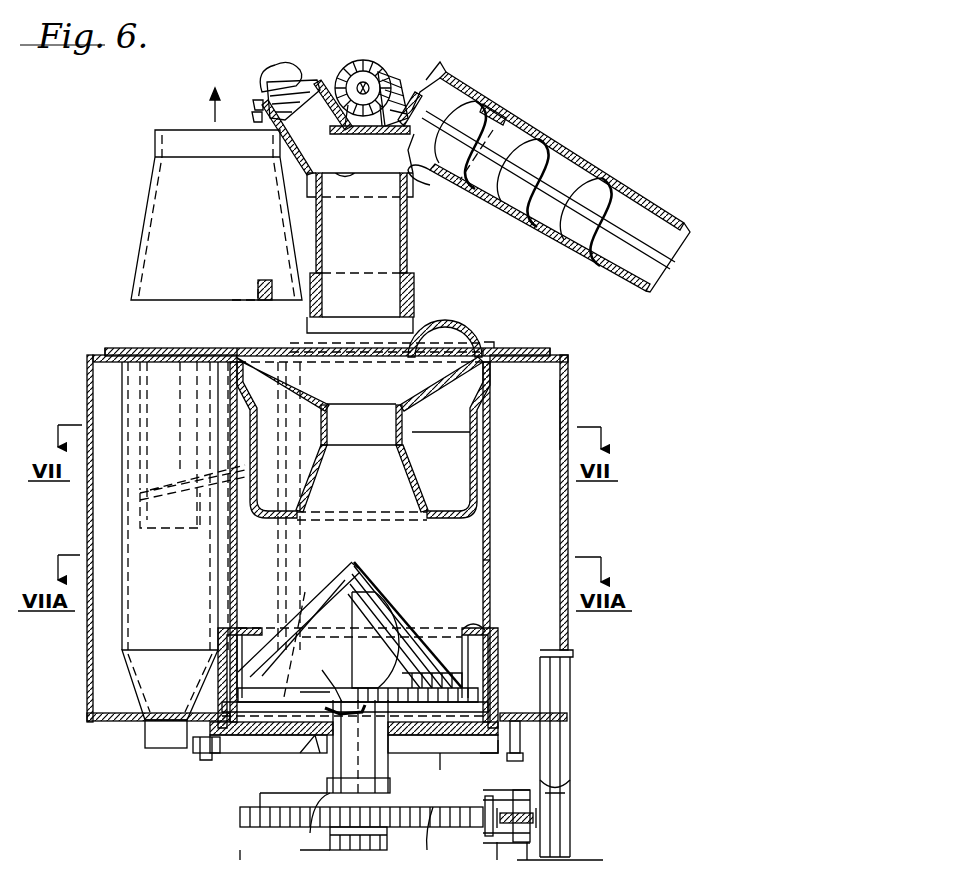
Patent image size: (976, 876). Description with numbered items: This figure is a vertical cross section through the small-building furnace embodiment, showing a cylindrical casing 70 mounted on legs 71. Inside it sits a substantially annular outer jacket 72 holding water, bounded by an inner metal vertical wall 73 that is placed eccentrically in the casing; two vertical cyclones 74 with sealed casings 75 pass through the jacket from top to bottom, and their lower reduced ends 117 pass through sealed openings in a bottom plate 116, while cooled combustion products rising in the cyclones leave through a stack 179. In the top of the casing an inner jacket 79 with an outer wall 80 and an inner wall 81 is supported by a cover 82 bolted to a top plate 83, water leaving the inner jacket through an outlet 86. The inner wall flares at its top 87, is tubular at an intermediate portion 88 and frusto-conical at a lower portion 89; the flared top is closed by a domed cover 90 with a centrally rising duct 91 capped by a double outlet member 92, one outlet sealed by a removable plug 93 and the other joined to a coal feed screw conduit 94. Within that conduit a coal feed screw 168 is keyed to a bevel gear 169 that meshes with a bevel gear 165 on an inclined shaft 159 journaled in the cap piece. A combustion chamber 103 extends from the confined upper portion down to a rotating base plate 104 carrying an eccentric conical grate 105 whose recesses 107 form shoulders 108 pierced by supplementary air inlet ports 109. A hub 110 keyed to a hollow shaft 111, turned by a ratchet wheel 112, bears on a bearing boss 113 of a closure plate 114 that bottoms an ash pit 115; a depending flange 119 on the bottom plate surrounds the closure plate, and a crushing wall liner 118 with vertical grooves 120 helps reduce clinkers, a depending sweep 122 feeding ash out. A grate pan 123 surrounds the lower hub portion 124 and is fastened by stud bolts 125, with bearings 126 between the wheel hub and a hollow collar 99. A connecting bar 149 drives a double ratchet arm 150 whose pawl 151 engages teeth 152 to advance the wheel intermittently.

The cylindrical casing 70 is at (568, 517).
The legs 71 is at (570, 780).
The outer jacket 72 is at (548, 387).
The inner metal vertical wall 73 is at (237, 566).
The vertical cyclones 74 is at (140, 505).
The cyclone casings 75 is at (122, 632).
The inner jacket 79 is at (450, 432).
The outer wall 80 is at (468, 465).
The inner wall 81 is at (408, 452).
The cover 82 is at (500, 348).
The top plate 83 is at (108, 350).
The outlet 86 is at (272, 292).
The flared top portion 87 is at (422, 385).
The intermediate tubular portion 88 is at (330, 422).
The lower frusto-conical portion 89 is at (410, 490).
The domed cover 90 is at (450, 326).
The centrally rising duct 91 is at (409, 238).
The double outlet member 92 is at (342, 127).
The plug 93 is at (288, 62).
The coal feed screw conduit 94 is at (555, 155).
The collar 99 is at (345, 852).
The combustion chamber 103 is at (478, 575).
The rotating base plate 104 is at (477, 698).
The conical grate 105 is at (432, 598).
The recesses 107 is at (360, 575).
The shoulder 108 is at (368, 650).
The supplementary combustion air inlet port 109 is at (322, 595).
The hub 110 is at (320, 660).
The hollow shaft 111 is at (400, 750).
The ratchet wheel 112 is at (240, 816).
The bearing boss 113 is at (330, 690).
The closure plate 114 is at (333, 745).
The ash pit 115 is at (490, 752).
The bottom plate 116 is at (125, 721).
The lower reduced ends 117 is at (160, 745).
The crushing wall liner 118 is at (480, 650).
The depending flange 119 is at (215, 753).
The vertical grooves 120 is at (258, 648).
The depending sweep 122 is at (290, 753).
The grate pan 123 is at (453, 770).
The lower hub portion 124 is at (327, 795).
The stud bolts 125 is at (180, 685).
The bearings 126 is at (330, 840).
The connecting bar 149 is at (536, 818).
The double ratchet arm 150 is at (470, 855).
The ratcheting pawl 151 is at (491, 859).
The teeth 152 is at (212, 863).
The inclined shaft 159 is at (372, 56).
The bevel gear 165 is at (370, 85).
The coal feed screw 168 is at (580, 205).
The bevel gear 169 is at (398, 76).
The stack 179 is at (175, 214).